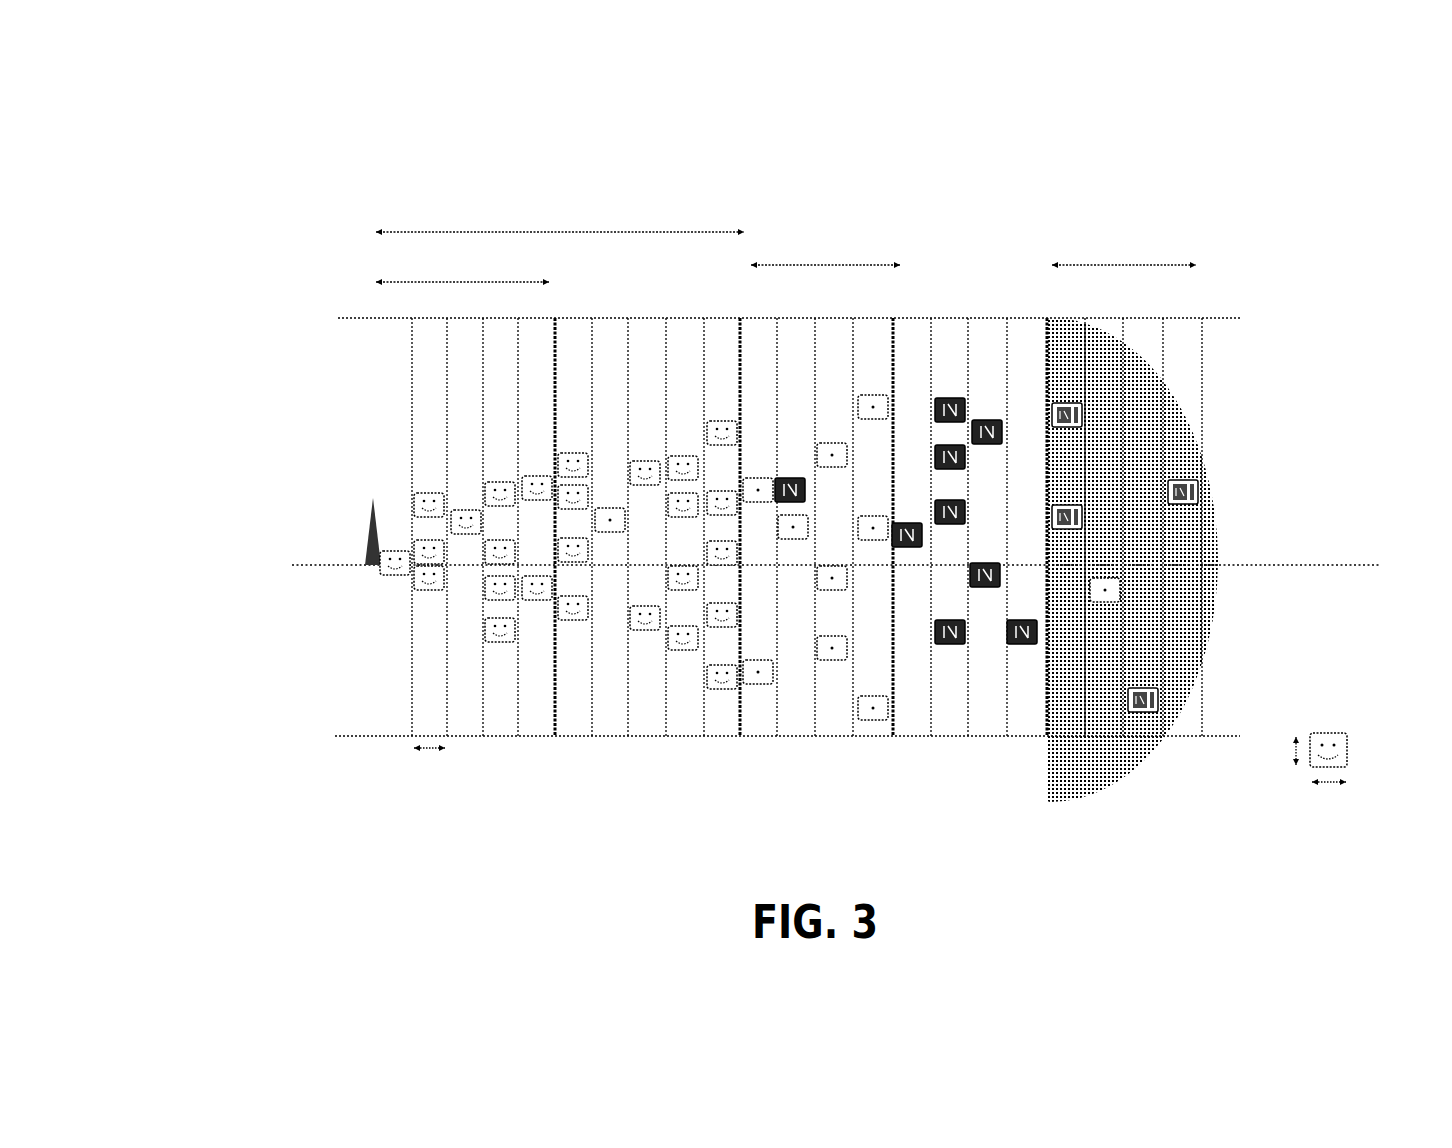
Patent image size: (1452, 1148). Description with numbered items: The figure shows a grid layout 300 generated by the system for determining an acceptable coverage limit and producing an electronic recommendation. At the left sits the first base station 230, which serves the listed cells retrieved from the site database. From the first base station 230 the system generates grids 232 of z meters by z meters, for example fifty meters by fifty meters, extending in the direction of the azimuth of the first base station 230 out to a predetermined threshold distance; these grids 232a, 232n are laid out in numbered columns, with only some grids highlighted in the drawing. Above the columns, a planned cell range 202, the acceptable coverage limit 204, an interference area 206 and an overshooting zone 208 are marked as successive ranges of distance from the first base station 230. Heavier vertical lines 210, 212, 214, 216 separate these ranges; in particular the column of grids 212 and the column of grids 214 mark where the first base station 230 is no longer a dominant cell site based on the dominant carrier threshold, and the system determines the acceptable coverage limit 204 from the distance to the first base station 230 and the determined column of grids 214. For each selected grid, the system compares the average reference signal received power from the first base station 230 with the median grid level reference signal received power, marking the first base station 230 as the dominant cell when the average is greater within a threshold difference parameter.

The cell coverage diagram 300 is at (230, 84).
The planned cell range 202 is at (368, 268).
The acceptable coverage limit 204 is at (474, 212).
The interference area 206 is at (752, 227).
The overshooting zone 208 is at (1043, 230).
The planned cell range boundary 210 is at (557, 674).
The column of grids 212 is at (742, 708).
The column of grids 214 is at (895, 697).
The overshooting zone boundary 216 is at (1048, 698).
The first base station 230 is at (364, 565).
The grids 232 is at (1323, 718).
The grid 232a is at (420, 488).
The grid 232n is at (1180, 476).